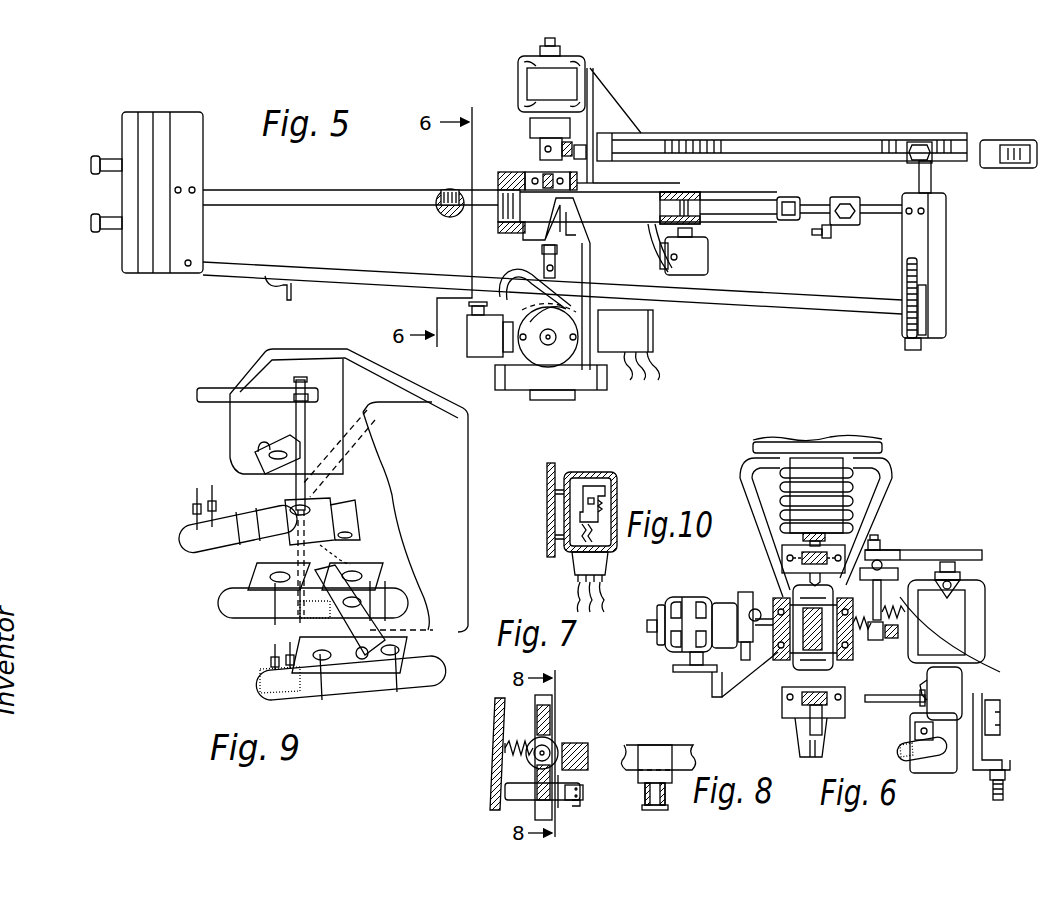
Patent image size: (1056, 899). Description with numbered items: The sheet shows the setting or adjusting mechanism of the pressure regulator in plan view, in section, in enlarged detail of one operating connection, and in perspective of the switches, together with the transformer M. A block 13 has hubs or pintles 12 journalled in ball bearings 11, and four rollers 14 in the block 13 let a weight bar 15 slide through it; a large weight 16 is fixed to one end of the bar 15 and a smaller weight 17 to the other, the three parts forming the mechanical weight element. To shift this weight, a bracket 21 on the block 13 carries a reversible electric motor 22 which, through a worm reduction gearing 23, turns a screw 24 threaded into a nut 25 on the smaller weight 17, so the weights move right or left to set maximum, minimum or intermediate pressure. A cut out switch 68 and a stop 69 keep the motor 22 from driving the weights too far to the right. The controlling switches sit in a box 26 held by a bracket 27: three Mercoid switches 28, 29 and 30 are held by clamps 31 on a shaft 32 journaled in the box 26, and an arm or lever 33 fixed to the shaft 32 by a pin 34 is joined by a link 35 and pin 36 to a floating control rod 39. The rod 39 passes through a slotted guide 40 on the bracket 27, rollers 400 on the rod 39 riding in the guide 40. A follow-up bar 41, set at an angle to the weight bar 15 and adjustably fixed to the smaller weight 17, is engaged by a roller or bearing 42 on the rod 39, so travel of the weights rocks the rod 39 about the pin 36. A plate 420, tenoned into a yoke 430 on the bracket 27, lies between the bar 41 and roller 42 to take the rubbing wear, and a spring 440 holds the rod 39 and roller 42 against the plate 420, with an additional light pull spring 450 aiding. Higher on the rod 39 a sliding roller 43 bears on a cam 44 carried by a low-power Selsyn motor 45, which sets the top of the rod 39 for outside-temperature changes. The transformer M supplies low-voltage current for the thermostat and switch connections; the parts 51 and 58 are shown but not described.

In FIG. 5, the ball bearings 11 is at (578, 186).
In FIG. 6, the ball bearings 11 is at (786, 606).
In FIG. 5, the hubs or pintles 12 is at (525, 173).
In FIG. 6, the hubs or pintles 12 is at (773, 623).
In FIG. 5, the block 13 is at (675, 208).
In FIG. 6, the rollers 14 is at (803, 667).
In FIG. 5, the weight bar 15 is at (341, 206).
In FIG. 5, the weight 16 is at (170, 274).
In FIG. 5, the smaller weight 17 is at (947, 250).
In FIG. 5, the bracket 21 is at (614, 112).
In FIG. 5, the electric motor 22 is at (584, 66).
In FIG. 6, the electric motor 22 is at (690, 604).
In FIG. 5, the worm reduction gearing 23 is at (531, 135).
In FIG. 6, the worm reduction gearing 23 is at (755, 626).
In FIG. 5, the screw 24 is at (716, 134).
In FIG. 5, the nut 25 is at (922, 143).
In FIG. 5, the box 26 is at (652, 340).
In FIG. 9, the box 26 is at (466, 572).
In FIG. 6, the box 26 is at (946, 771).
In FIG. 5, the bracket 27 is at (591, 262).
In FIG. 7, the bracket 27 is at (494, 802).
In FIG. 9, the Mercoid switch 28 is at (180, 522).
In FIG. 9, the Mercoid switch 29 is at (220, 601).
In FIG. 9, the Mercoid switch 30 is at (258, 680).
In FIG. 9, the clamps 31 is at (396, 682).
In FIG. 9, the shaft 32 is at (362, 661).
In FIG. 9, the arm or lever 33 is at (296, 434).
In FIG. 9, the pin 34 is at (290, 548).
In FIG. 9, the link 35 is at (211, 387).
In FIG. 6, the link 35 is at (906, 703).
In FIG. 9, the pin 36 is at (303, 395).
In FIG. 7, the floating control rod 39 is at (552, 700).
In FIG. 6, the floating control rod 39 is at (941, 693).
In FIG. 6, the slotted guide 40 is at (891, 567).
In FIG. 5, the follow-up bar 41 is at (760, 304).
In FIG. 7, the follow-up bar 41 is at (580, 746).
In FIG. 8, the follow-up bar 41 is at (694, 747).
In FIG. 6, the follow-up bar 41 is at (991, 746).
In FIG. 7, the roller or bearing 42 is at (552, 740).
In FIG. 6, the roller 43 is at (881, 546).
In FIG. 6, the cam 44 is at (984, 556).
In FIG. 5, the Selsyn motor 45 is at (535, 358).
In FIG. 6, the Selsyn motor 45 is at (976, 623).
In FIG. 5, the clamp block 51 is at (851, 228).
In FIG. 5, the solenoid 58 is at (692, 268).
In FIG. 5, the cut out switch 68 is at (478, 357).
In FIG. 5, the stop 69 is at (284, 296).
In FIG. 6, the rollers 400 is at (883, 559).
In FIG. 7, the plate 420 is at (560, 745).
In FIG. 8, the plate 420 is at (640, 775).
In FIG. 7, the yoke 430 is at (566, 802).
In FIG. 8, the yoke 430 is at (668, 797).
In FIG. 7, the spring 440 is at (503, 766).
In FIG. 6, the spring 440 is at (858, 637).
In FIG. 6, the pull spring 450 is at (970, 641).
In FIG. 10, the transformer M is at (606, 562).